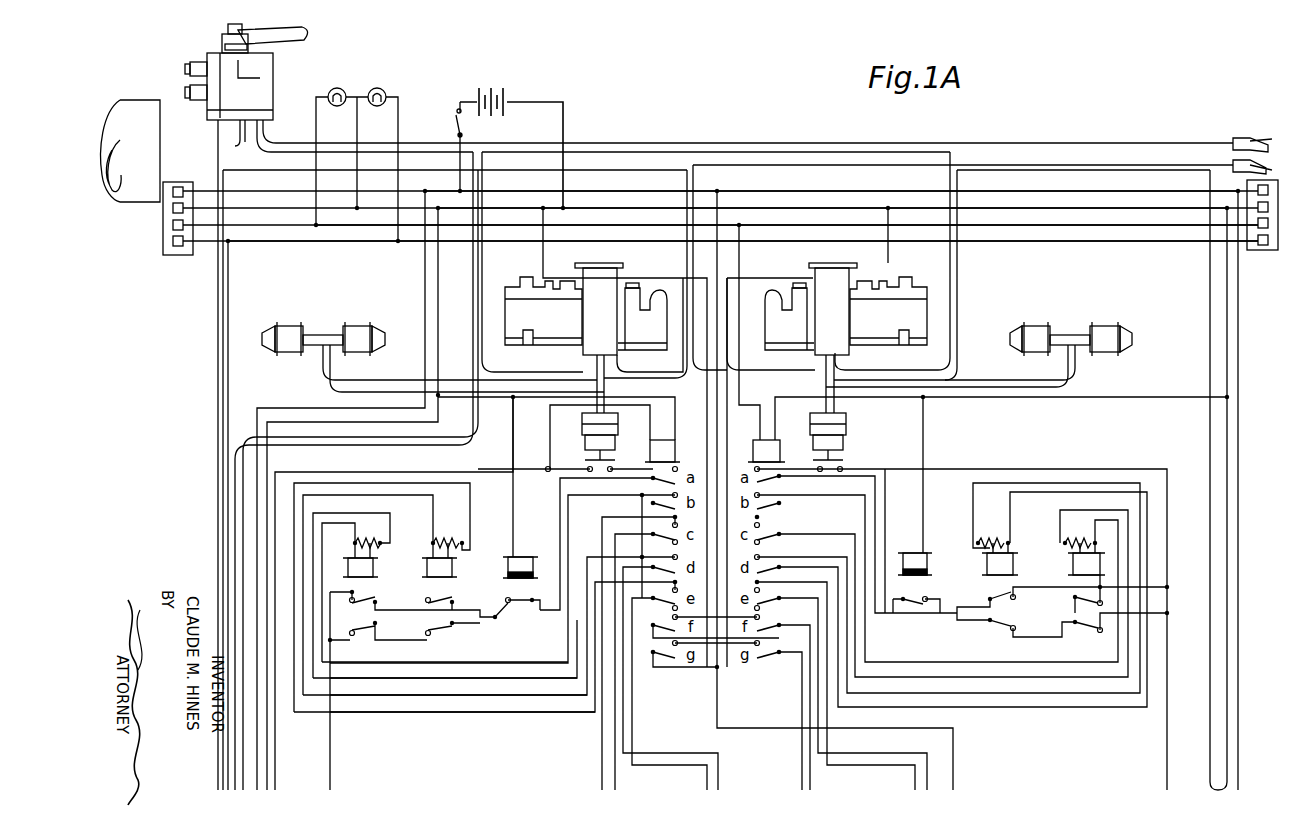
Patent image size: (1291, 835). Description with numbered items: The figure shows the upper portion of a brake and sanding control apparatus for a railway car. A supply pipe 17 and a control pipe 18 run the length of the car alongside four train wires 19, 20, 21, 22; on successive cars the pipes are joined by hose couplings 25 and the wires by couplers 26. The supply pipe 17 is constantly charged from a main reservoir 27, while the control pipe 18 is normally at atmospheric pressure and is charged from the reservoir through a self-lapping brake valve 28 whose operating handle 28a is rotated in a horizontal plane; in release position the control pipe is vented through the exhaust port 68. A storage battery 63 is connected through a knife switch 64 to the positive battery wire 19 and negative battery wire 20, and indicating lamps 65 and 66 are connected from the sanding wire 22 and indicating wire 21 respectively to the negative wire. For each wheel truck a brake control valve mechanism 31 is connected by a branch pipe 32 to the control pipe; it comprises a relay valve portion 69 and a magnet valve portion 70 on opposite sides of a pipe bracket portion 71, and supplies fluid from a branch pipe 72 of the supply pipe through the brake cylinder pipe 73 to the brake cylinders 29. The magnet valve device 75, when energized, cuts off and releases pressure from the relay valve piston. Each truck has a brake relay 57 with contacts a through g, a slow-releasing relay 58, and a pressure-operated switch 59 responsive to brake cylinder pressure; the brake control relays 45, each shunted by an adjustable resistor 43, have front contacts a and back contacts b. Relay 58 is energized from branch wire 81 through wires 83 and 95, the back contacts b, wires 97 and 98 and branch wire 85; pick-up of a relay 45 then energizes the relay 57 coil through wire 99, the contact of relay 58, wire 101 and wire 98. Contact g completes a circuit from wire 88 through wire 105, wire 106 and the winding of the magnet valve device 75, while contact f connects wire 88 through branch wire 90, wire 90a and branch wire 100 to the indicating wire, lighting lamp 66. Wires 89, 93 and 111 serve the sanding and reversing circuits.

The supply pipe 17 is at (640, 170).
The control pipe 18 is at (660, 146).
The positive battery wire 19 is at (831, 183).
The negative battery wire 20 is at (584, 209).
The indicating wire 21 is at (606, 226).
The sanding wire 22 is at (624, 243).
The hose coupling 25 is at (1262, 163).
The coupler 26 is at (1260, 253).
The main reservoir 27 is at (146, 97).
The brake valve 28 is at (200, 56).
The operating handle 28a is at (312, 36).
The brake cylinder 29 is at (346, 330).
The brake control valve mechanism 31 is at (505, 284).
The branch pipe 32 is at (480, 270).
The adjustable resistor 43 is at (358, 540).
The brake control relay 45 is at (424, 566).
The brake relay 57 is at (678, 446).
The slow-releasing relay 58 is at (500, 564).
The pressure-operated switch 59 is at (586, 450).
The storage battery 63 is at (498, 95).
The knife switch 64 is at (454, 122).
The indicating lamp 65 is at (382, 88).
The indicating lamp 66 is at (334, 88).
The exhaust port 68 is at (237, 144).
The relay valve portion 69 is at (640, 348).
The magnet valve portion 70 is at (553, 348).
The pipe bracket portion 71 is at (583, 350).
The branch pipe 72 is at (686, 254).
The brake cylinder pipe 73 is at (370, 392).
The magnet valve device 75 is at (568, 270).
The branch wire 81 is at (422, 268).
The wire 83 is at (450, 474).
The branch wire 85 is at (440, 302).
The wire 88 is at (720, 200).
The wire 89 is at (232, 272).
The branch wire 90 is at (664, 643).
The wire 90a is at (640, 616).
The branch wire 93 is at (1224, 275).
The branch wire 95 is at (333, 781).
The wire 97 is at (513, 444).
The wire 98 is at (440, 398).
The wire 99 is at (468, 605).
The branch wire 100 is at (730, 389).
The wire 101 is at (550, 445).
The wire 105 is at (656, 670).
The wire 106 is at (542, 254).
The branch wire 111 is at (1235, 316).